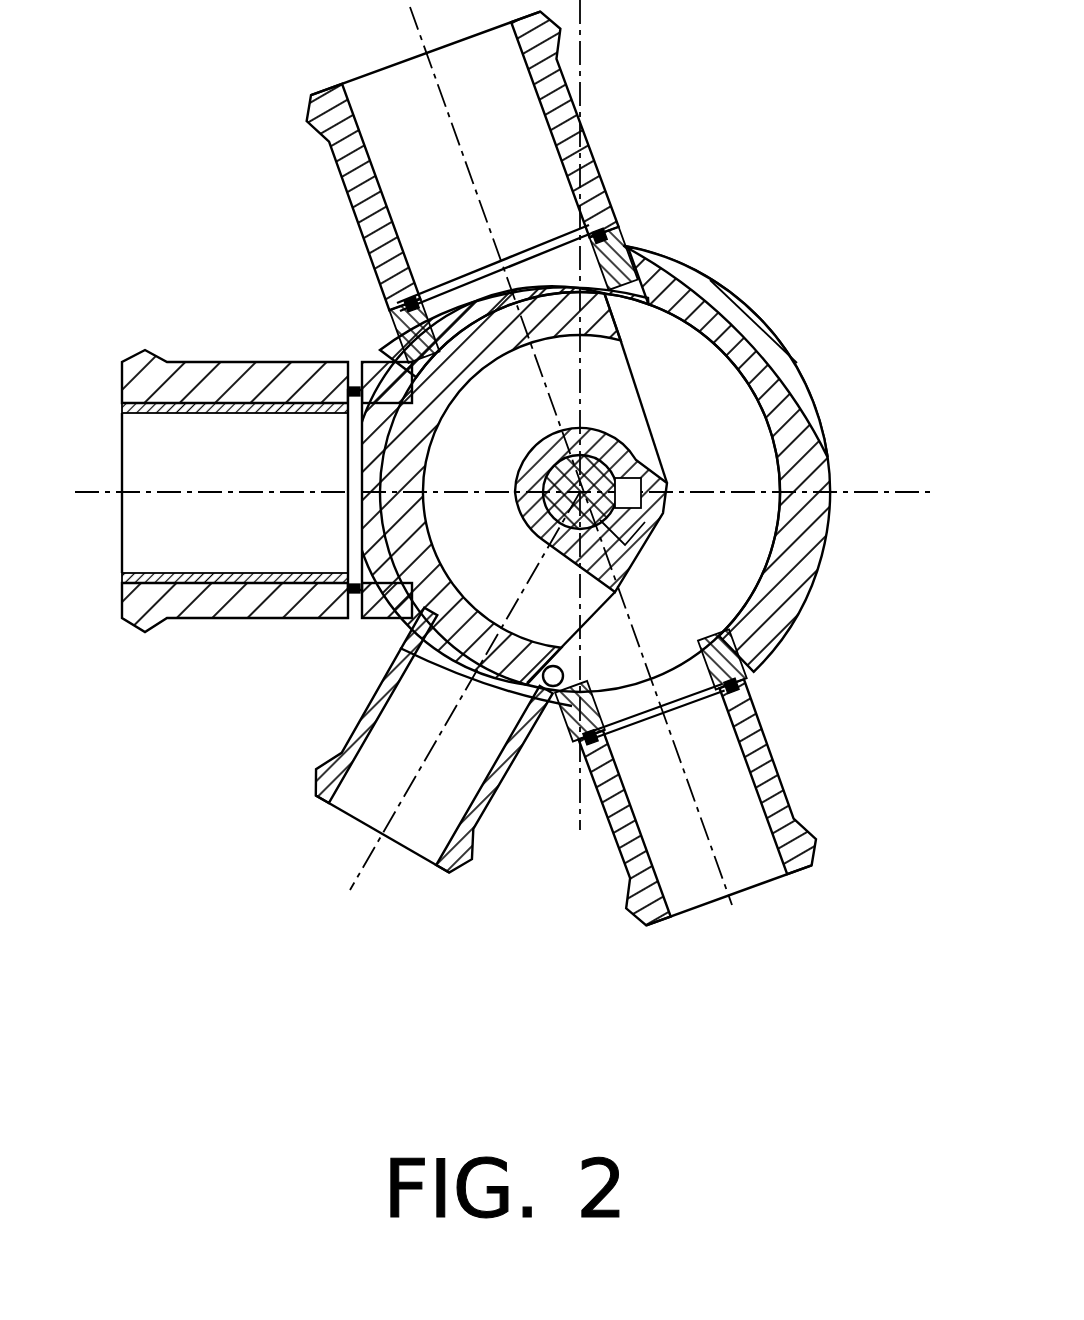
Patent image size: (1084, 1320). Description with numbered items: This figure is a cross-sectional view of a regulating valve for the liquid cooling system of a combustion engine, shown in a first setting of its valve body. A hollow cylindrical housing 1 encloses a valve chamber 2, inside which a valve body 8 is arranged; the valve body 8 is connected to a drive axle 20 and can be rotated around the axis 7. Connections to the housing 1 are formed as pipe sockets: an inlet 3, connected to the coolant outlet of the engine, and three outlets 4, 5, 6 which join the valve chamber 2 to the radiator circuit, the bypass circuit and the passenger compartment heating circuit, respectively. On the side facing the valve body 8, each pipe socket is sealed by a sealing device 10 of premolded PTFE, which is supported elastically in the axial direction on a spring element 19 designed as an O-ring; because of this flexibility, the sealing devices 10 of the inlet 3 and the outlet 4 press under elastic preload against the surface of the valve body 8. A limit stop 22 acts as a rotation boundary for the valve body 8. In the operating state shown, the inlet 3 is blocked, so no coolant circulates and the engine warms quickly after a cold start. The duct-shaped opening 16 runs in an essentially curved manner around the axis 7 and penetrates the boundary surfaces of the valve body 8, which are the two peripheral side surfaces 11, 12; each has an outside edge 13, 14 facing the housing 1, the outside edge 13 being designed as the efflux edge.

The housing 1 is at (808, 463).
The valve chamber 2 is at (740, 565).
The inlet 3 is at (150, 457).
The outlet 4 is at (388, 97).
The outlet 5 is at (745, 850).
The outlet 6 is at (367, 787).
The axis 7 is at (648, 494).
The valve body 8 is at (630, 430).
The sealing device 10 is at (617, 262).
The peripheral side surface 11 is at (600, 610).
The peripheral side surface 12 is at (637, 373).
The outside edge 13 is at (513, 690).
The outside edge 14 is at (703, 265).
The duct-shaped opening 16 is at (377, 520).
The spring element 19 is at (600, 232).
The drive axle 20 is at (625, 450).
The limit stop 22 is at (547, 735).